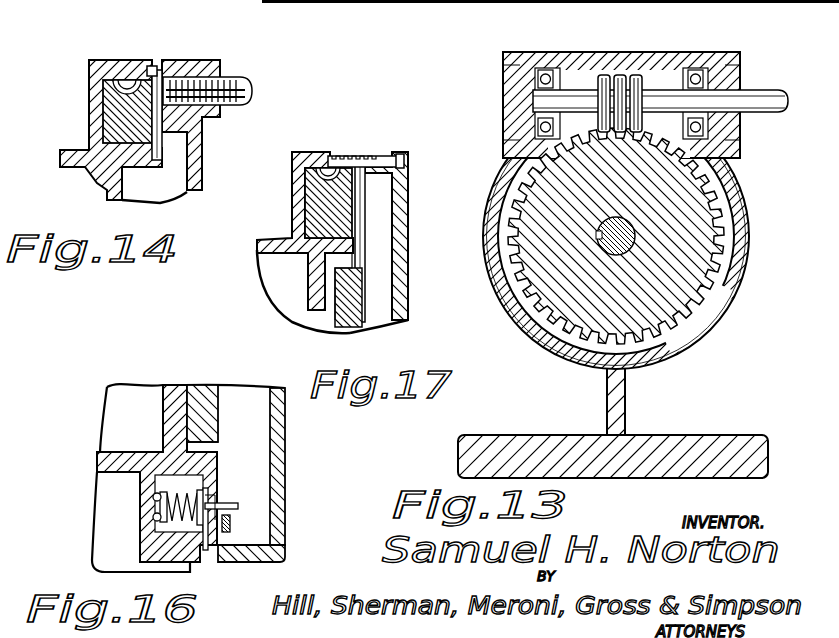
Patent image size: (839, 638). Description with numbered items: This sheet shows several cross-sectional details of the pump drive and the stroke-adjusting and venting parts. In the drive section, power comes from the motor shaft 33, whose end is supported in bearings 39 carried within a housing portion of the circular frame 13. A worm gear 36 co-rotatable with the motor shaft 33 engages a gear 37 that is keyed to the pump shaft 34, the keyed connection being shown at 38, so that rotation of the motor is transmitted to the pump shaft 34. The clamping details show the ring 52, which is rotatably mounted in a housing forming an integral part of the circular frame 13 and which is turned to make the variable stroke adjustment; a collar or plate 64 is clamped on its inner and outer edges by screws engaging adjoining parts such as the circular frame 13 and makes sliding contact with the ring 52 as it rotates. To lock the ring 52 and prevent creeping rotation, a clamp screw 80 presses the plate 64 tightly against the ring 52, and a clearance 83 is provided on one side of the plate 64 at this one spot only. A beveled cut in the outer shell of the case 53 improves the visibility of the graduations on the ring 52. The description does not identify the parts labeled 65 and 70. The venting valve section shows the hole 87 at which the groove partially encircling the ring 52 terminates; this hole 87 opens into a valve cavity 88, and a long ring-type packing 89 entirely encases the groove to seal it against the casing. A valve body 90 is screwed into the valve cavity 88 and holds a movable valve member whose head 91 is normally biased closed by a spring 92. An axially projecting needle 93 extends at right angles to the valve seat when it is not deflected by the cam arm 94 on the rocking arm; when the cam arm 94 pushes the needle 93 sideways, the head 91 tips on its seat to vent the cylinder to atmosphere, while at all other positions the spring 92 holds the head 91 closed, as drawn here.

In FIG. 14, the circular frame 13 is at (197, 149).
In FIG. 17, the circular frame 13 is at (410, 196).
In FIG. 16, the circular frame 13 is at (503, 394).
In FIG. 13, the motor shaft 33 is at (760, 94).
In FIG. 13, the pump shaft 34 is at (628, 238).
In FIG. 13, the worm gear 36 is at (612, 80).
In FIG. 13, the gear 37 is at (692, 246).
In FIG. 13, the key 38 is at (598, 237).
In FIG. 13, the bearings 39 is at (564, 70).
In FIG. 14, the ring 52 is at (110, 112).
In FIG. 17, the ring 52 is at (318, 206).
In FIG. 14, the case 53 is at (92, 62).
In FIG. 17, the case 53 is at (293, 152).
In FIG. 16, the case 53 is at (145, 509).
In FIG. 14, the collar plate 64 is at (160, 154).
In FIG. 17, the collar plate 64 is at (358, 224).
In FIG. 16, the collar plate 64 is at (205, 458).
In FIG. 17, the screw 65 is at (355, 156).
In FIG. 16, the detent recess 70 is at (215, 500).
In FIG. 14, the clamp screw 80 is at (242, 84).
In FIG. 14, the clearance 83 is at (150, 70).
In FIG. 16, the hole 87 is at (153, 512).
In FIG. 16, the valve cavity 88 is at (175, 495).
In FIG. 16, the ring-type packing 89 is at (153, 499).
In FIG. 16, the valve body 90 is at (212, 470).
In FIG. 16, the head 91 is at (205, 550).
In FIG. 16, the spring 92 is at (160, 497).
In FIG. 16, the needle 93 is at (228, 506).
In FIG. 16, the cam arm 94 is at (232, 524).